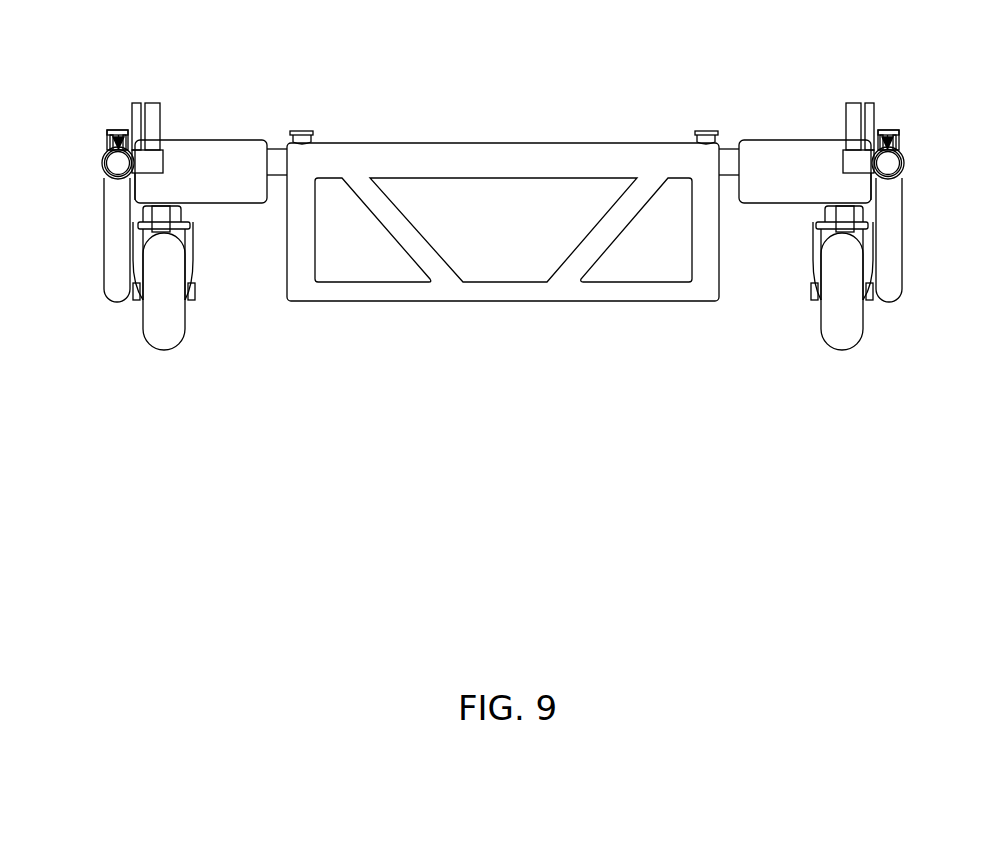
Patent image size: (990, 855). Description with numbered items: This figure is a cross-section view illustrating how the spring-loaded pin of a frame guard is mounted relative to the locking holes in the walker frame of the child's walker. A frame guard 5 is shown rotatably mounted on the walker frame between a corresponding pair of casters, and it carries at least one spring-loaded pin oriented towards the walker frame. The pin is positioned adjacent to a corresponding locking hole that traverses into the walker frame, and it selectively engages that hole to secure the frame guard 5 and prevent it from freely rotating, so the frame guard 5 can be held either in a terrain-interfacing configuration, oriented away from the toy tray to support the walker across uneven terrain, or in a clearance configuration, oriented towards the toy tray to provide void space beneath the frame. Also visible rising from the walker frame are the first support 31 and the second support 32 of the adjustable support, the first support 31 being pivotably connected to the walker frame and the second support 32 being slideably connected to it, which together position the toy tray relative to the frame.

The plurality of frame guards 5 is at (512, 292).
The first support 31 is at (137, 106).
The second support 32 is at (153, 118).